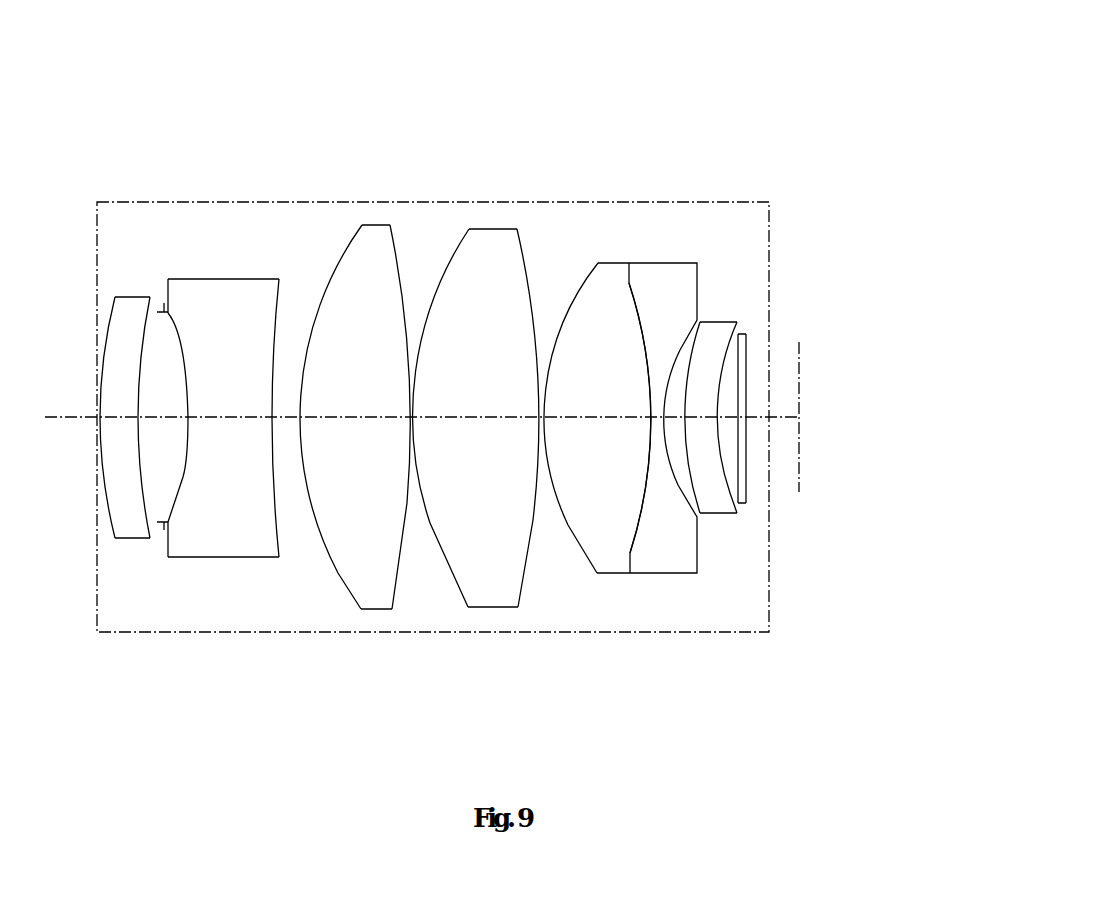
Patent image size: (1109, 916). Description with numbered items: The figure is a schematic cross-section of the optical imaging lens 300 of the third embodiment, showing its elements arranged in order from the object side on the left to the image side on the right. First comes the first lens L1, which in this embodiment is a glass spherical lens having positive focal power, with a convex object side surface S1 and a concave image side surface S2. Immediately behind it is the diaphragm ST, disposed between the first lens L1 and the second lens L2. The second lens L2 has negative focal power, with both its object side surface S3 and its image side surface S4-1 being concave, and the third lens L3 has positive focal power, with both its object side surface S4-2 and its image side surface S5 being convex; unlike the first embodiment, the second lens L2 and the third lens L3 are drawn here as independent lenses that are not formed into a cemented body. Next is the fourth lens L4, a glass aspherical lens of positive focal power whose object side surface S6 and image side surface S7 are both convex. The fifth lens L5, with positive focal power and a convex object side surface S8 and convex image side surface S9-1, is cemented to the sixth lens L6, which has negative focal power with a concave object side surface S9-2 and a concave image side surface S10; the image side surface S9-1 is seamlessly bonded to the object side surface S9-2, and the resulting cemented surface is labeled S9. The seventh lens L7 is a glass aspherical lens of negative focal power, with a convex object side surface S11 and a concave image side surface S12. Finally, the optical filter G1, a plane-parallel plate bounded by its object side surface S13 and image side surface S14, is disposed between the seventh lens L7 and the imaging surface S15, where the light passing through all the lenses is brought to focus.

The optical imaging lens 300 is at (85, 204).
The first lens L1 is at (100, 415).
The second lens L2 is at (259, 420).
The third lens L3 is at (369, 421).
The fourth lens L4 is at (488, 420).
The fifth lens L5 is at (566, 418).
The sixth lens L6 is at (719, 408).
The seventh lens L7 is at (785, 420).
The optical filter G1 is at (849, 423).
The diaphragm ST is at (162, 523).
The object side surface of the first lens S1 is at (109, 517).
The image side surface of the first lens S2 is at (143, 507).
The object side surface of the second lens S3 is at (182, 477).
The image side surface of the second lens S4-1 is at (277, 523).
The object side surface of the third lens S4-2 is at (338, 573).
The image side surface of the third lens S5 is at (407, 503).
The object side surface of the fourth lens S6 is at (430, 523).
The image side surface of the fourth lens S7 is at (533, 520).
The object side surface of the fifth lens S8 is at (568, 525).
The cemented surface of the fifth and sixth lenses S9 is at (648, 294).
The image side surface of the fifth lens S9-1 is at (648, 357).
The object side surface of the sixth lens S9-2 is at (650, 390).
The image side surface of the sixth lens S10 is at (678, 485).
The object side surface of the seventh lens S11 is at (690, 470).
The image side surface of the seventh lens S12 is at (731, 490).
The object side surface of the optical filter S13 is at (745, 503).
The image side surface of the optical filter S14 is at (746, 418).
The imaging surface S15 is at (799, 418).